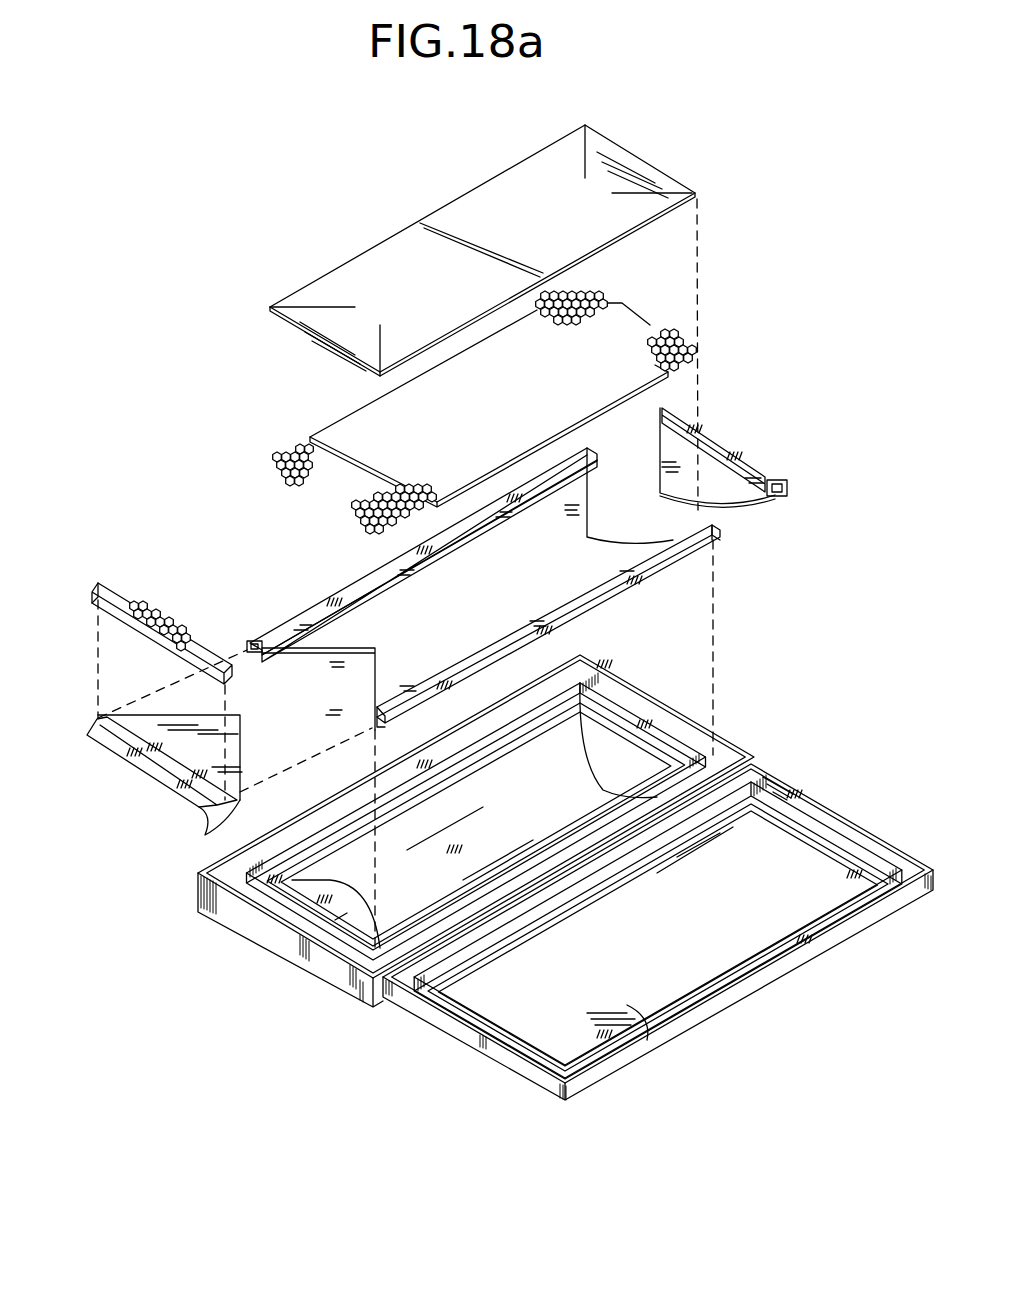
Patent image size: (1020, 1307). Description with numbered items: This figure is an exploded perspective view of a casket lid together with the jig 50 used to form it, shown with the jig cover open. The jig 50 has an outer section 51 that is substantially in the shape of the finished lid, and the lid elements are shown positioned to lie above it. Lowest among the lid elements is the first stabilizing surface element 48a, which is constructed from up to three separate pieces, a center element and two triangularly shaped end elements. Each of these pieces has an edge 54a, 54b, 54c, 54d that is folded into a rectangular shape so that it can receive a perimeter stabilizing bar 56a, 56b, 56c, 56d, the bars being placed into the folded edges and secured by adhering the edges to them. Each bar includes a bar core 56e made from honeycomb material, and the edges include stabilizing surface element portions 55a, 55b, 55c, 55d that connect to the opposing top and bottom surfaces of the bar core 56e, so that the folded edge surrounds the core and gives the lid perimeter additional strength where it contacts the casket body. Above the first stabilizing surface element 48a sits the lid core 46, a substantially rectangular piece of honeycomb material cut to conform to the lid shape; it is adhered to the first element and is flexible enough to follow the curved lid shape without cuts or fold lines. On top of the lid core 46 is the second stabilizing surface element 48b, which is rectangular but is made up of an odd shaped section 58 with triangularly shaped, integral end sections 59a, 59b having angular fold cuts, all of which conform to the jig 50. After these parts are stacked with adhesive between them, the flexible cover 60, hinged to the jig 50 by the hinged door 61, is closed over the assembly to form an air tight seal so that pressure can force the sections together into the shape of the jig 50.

The odd shaped section 58 is at (408, 273).
The triangularly shaped end section 59a is at (603, 150).
The triangularly shaped end section 59b is at (333, 318).
The second stabilizing surface element 48b is at (707, 194).
The lid core 46 is at (632, 330).
The edge 54a is at (727, 452).
The stabilizing surface element portion 55a is at (787, 486).
The perimeter stabilizing bar 56a is at (781, 497).
The edge 54b is at (320, 608).
The stabilizing surface element portion 55b is at (272, 628).
The perimeter stabilizing bar 56b is at (257, 652).
The edge 54c is at (82, 727).
The stabilizing surface element portion 55c is at (208, 828).
The perimeter stabilizing bar 56c is at (121, 586).
The bar core 56e is at (160, 633).
The edge 54d is at (578, 612).
The stabilizing surface element portion 55d is at (664, 560).
The perimeter stabilizing bar 56d is at (718, 524).
The first stabilizing surface element 48a is at (627, 606).
The jig 50 is at (307, 927).
The outer section 51 is at (495, 855).
The flexible cover 60 is at (616, 1006).
The hinged door 61 is at (497, 1045).